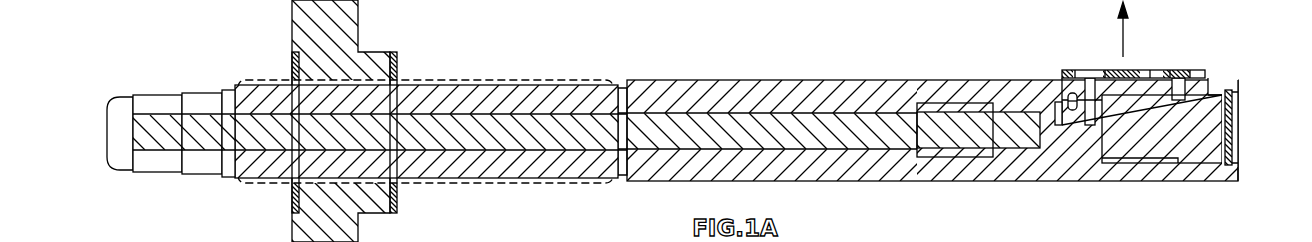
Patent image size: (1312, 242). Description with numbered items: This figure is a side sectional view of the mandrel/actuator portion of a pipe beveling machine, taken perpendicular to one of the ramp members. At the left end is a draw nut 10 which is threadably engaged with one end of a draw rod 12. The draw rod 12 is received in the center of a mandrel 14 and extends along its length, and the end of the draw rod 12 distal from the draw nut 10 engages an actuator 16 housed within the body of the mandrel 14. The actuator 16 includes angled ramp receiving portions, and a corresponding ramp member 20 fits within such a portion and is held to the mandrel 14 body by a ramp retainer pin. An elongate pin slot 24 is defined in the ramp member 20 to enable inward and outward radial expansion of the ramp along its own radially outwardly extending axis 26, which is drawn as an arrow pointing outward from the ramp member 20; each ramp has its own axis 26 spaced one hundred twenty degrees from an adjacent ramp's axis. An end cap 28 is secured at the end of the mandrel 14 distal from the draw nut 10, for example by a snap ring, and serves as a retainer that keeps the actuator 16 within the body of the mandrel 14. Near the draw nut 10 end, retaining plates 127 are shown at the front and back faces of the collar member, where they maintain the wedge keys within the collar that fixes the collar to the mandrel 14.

The draw nut 10 is at (207, 88).
The retaining plates 127 is at (292, 62).
The mandrel 14 is at (700, 80).
The draw rod 12 is at (785, 120).
The actuator 16 is at (990, 108).
The pin slot 24 is at (1058, 100).
The axis 26 is at (1118, 34).
The ramp member 20 is at (1147, 80).
The end cap 28 is at (1235, 110).